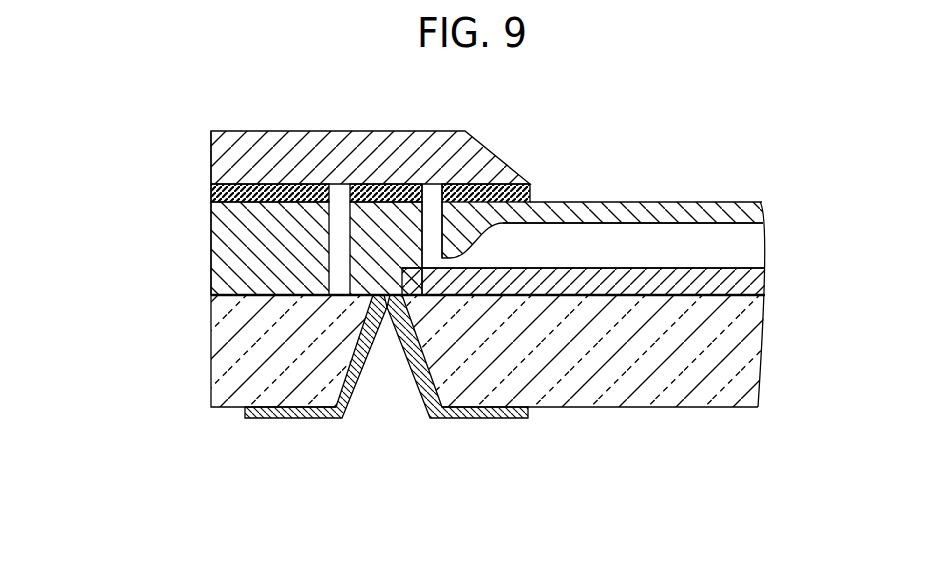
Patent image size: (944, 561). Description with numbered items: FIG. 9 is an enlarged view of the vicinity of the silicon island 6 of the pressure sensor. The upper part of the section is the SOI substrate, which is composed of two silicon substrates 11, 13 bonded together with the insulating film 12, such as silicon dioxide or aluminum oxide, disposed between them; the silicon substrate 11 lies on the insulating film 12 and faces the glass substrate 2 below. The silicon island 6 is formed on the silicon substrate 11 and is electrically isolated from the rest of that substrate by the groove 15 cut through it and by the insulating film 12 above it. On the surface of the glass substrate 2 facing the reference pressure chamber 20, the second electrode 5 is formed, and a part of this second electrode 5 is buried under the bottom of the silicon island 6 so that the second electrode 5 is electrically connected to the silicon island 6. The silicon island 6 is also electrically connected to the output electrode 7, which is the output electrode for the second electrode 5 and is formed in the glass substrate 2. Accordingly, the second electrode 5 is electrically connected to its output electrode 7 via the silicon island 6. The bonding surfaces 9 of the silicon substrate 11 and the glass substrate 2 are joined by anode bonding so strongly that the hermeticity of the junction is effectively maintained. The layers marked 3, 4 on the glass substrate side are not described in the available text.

The glass substrate 2 is at (753, 340).
The elastic film 3 is at (633, 183).
The insulating film 4 is at (675, 207).
The second electrode 5 is at (760, 278).
The silicon island 6 is at (369, 206).
The output electrode 7 is at (352, 405).
The bonding surfaces 9 is at (215, 294).
The silicon substrate 11 is at (325, 194).
The insulating film 12 is at (213, 188).
The silicon substrate 13 is at (218, 153).
The groove 15 is at (428, 206).
The reference pressure chamber 20 is at (760, 240).